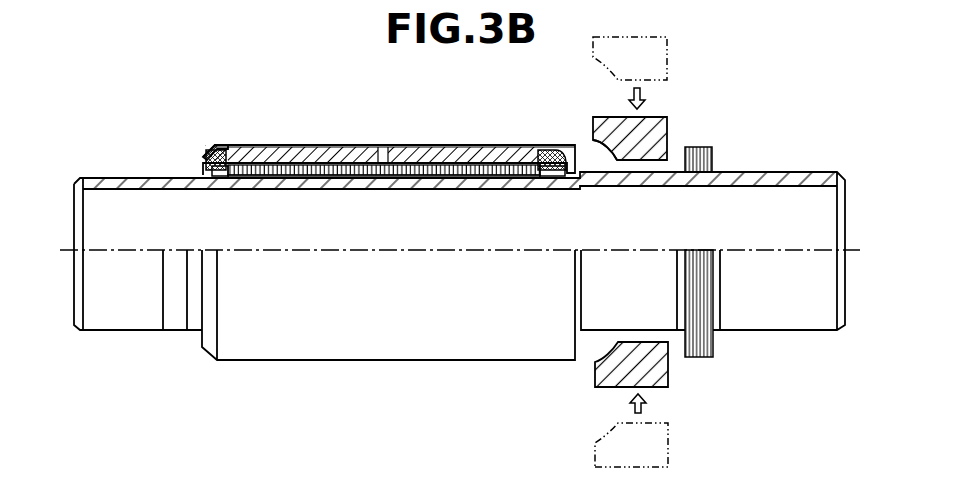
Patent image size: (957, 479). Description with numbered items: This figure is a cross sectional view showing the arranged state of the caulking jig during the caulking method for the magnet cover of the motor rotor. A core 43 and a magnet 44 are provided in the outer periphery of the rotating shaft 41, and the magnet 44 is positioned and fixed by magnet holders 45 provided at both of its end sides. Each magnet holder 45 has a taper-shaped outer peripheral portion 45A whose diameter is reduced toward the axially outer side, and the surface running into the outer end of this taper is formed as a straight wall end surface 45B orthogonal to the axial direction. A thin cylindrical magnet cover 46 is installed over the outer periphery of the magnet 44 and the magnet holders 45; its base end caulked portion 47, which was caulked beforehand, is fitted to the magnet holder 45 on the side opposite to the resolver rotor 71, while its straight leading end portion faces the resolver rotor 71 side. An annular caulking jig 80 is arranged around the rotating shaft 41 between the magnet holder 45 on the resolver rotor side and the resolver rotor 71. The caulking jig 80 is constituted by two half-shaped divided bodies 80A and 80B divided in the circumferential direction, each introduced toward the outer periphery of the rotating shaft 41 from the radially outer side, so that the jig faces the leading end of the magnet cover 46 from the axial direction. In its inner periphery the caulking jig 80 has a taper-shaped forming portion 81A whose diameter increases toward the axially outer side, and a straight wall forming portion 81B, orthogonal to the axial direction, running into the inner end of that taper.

The rotating shaft 41 is at (808, 172).
The core 43 is at (365, 176).
The magnet 44 is at (310, 166).
The magnet holder 45 is at (537, 150).
The taper-shaped outer peripheral portion 45A is at (567, 148).
The straight wall end surface 45B is at (563, 176).
The magnet cover 46 is at (423, 145).
The base end caulked portion 47 is at (203, 155).
The resolver rotor 71 is at (714, 150).
The caulking jig 80 is at (678, 114).
The divided body 80A is at (667, 136).
The divided body 80B is at (668, 368).
The taper-shaped forming portion 81A is at (604, 157).
The straight wall forming portion 81B is at (612, 160).